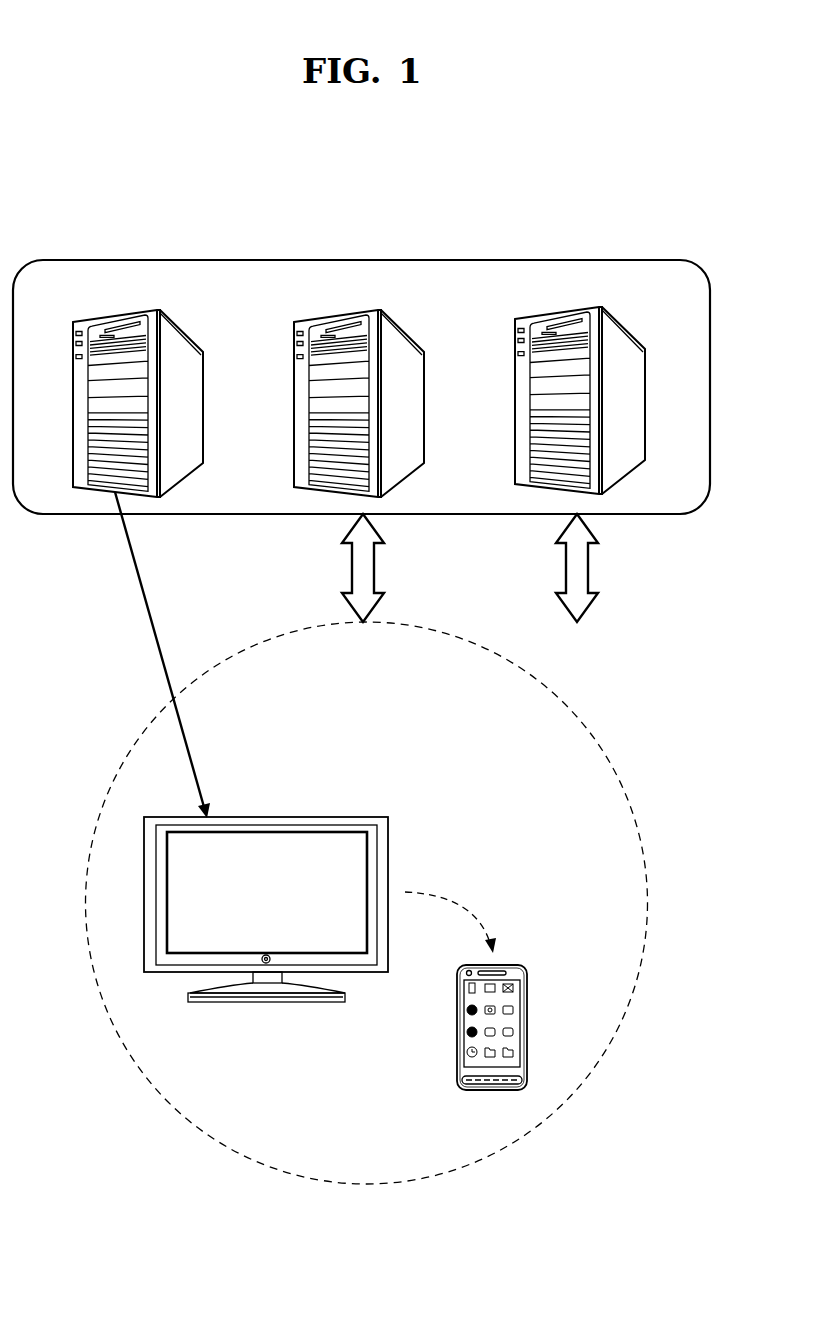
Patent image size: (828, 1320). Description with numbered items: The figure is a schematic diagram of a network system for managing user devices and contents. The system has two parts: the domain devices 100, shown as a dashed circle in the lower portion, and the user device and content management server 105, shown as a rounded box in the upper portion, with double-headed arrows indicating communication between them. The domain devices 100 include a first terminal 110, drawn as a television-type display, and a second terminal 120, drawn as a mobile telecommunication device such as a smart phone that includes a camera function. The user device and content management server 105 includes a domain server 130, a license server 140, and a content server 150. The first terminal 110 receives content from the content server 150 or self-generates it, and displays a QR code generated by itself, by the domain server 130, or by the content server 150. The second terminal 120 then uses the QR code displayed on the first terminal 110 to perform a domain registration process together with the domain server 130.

The domain devices 100 is at (648, 900).
The user device and content management server 105 is at (363, 260).
The first terminal 110 is at (265, 817).
The second terminal 120 is at (515, 965).
The domain server 130 is at (600, 306).
The license server 140 is at (378, 310).
The content server 150 is at (157, 310).